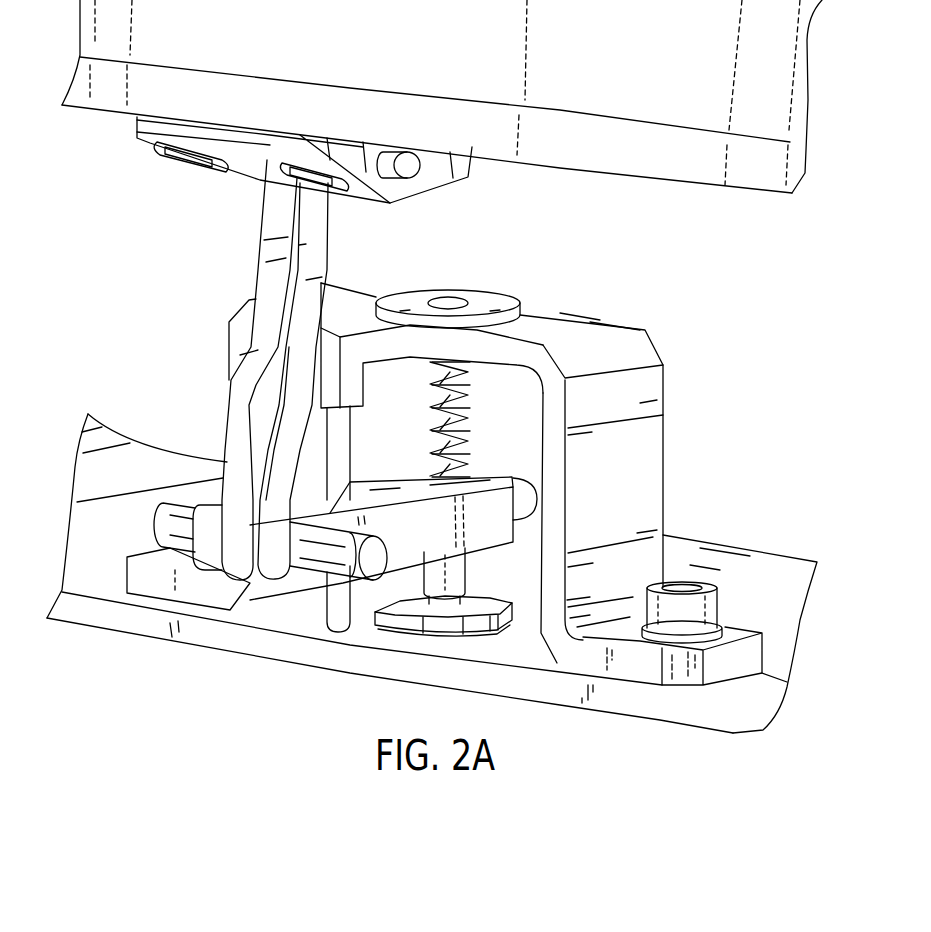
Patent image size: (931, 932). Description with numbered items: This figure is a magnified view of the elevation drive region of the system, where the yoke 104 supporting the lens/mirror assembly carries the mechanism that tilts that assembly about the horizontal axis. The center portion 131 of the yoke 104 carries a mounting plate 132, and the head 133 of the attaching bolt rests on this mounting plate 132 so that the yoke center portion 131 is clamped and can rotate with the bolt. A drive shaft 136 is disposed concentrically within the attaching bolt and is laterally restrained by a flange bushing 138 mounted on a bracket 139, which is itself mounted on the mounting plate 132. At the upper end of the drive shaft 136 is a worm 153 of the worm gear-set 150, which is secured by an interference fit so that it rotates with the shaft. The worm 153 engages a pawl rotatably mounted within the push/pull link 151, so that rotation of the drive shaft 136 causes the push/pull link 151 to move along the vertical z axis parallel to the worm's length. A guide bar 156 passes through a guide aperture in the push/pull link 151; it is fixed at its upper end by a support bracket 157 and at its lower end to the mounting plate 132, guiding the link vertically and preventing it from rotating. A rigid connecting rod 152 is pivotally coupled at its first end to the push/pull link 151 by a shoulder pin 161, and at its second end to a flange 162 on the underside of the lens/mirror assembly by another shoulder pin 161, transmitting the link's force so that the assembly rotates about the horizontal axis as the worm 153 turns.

The yoke 104 is at (730, 548).
The center portion 131 is at (222, 640).
The mounting plate 132 is at (118, 567).
The head 133 is at (478, 604).
The drive shaft 136 is at (458, 570).
The flange bushing 138 is at (508, 297).
The bracket 139 is at (492, 466).
The worm gear-set 150 is at (387, 481).
The push/pull link 151 is at (397, 493).
The connecting rod 152 is at (262, 268).
The worm 153 is at (468, 392).
The guide bar 156 is at (341, 419).
The support bracket 157 is at (378, 358).
The shoulder pin 161 is at (410, 172).
The flange 162 is at (226, 172).